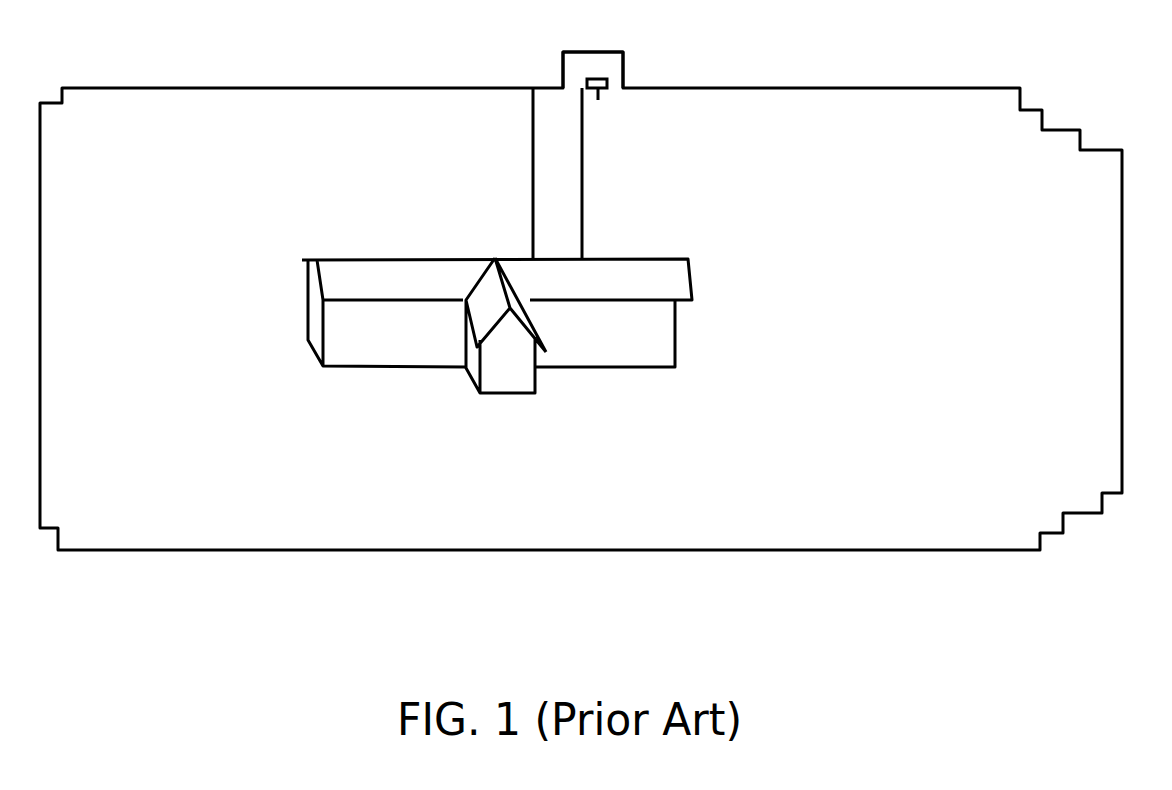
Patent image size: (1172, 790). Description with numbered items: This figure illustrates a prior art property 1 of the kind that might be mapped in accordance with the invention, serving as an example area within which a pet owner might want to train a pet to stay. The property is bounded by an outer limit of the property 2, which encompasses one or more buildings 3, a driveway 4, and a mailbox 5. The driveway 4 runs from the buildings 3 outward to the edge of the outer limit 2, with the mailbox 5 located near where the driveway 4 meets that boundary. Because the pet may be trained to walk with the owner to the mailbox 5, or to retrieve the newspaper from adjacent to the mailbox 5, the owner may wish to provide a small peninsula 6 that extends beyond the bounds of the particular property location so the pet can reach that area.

The lighting device 1 is at (1087, 101).
The outer limit of the property 2 is at (1122, 243).
The building 3 is at (497, 325).
The driveway 4 is at (547, 183).
The mailbox 5 is at (611, 99).
The peninsula 6 is at (605, 64).